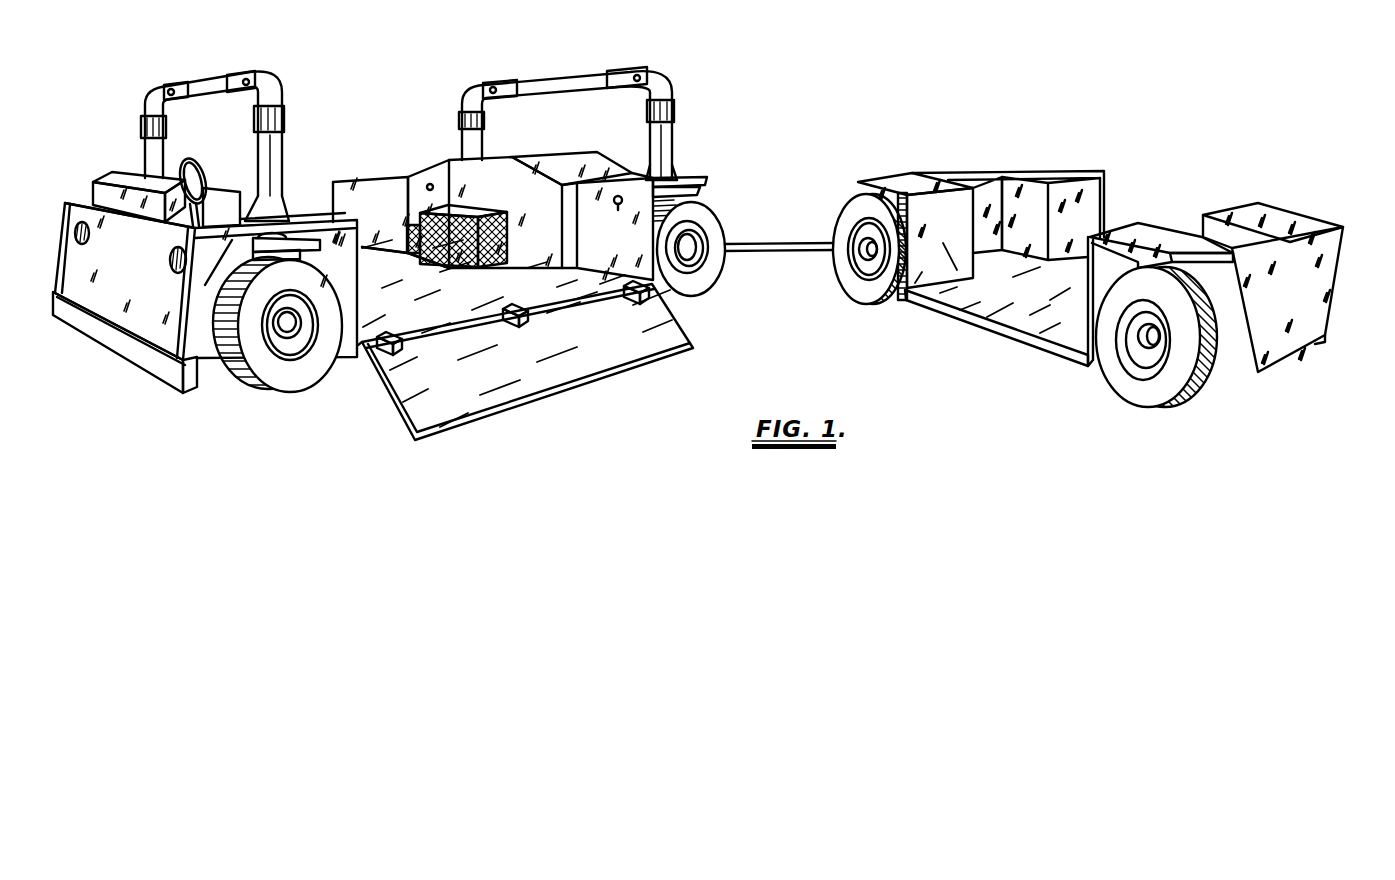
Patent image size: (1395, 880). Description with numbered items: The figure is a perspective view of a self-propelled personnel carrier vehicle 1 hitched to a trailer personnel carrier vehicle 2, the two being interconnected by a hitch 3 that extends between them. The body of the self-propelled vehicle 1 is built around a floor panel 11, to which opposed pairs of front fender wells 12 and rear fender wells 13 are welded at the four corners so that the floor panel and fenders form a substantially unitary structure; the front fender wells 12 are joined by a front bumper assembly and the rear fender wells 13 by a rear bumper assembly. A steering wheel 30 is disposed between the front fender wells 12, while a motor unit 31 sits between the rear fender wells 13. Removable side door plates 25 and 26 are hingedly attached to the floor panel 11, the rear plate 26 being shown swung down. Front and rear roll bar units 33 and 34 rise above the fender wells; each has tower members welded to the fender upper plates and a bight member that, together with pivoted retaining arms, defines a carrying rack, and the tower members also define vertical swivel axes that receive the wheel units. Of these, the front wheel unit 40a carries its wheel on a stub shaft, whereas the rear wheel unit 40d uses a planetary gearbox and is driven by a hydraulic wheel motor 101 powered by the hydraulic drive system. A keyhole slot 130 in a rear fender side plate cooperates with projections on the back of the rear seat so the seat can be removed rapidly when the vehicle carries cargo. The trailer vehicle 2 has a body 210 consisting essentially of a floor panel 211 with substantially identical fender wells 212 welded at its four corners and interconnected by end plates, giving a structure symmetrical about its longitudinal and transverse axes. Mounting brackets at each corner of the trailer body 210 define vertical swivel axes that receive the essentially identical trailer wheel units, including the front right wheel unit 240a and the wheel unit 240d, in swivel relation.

The self-propelled personnel carrier vehicle 1 is at (692, 120).
The trailer personnel carrier vehicle 2 is at (1240, 190).
The hitch 3 is at (764, 252).
The floor panel 11 is at (397, 304).
The front fender wells 12 is at (215, 202).
The rear fender wells 13 is at (431, 184).
The removable side door plate 25 is at (381, 180).
The removable side door plate 26 is at (613, 362).
The steering wheel 30 is at (198, 166).
The motor unit 31 is at (578, 162).
The front roll bar unit 33 is at (277, 86).
The rear roll bar unit 34 is at (588, 82).
The front wheel unit 40a is at (275, 378).
The rear wheel unit 40d is at (716, 224).
The hydraulic wheel motor 101 is at (698, 256).
The keyhole slot 130 is at (617, 212).
The trailer body 210 is at (1094, 174).
The trailer floor panel 211 is at (1027, 312).
The trailer fender wells 212 is at (898, 181).
The trailer front right wheel unit 240a is at (851, 219).
The trailer wheel unit 240d is at (1178, 364).